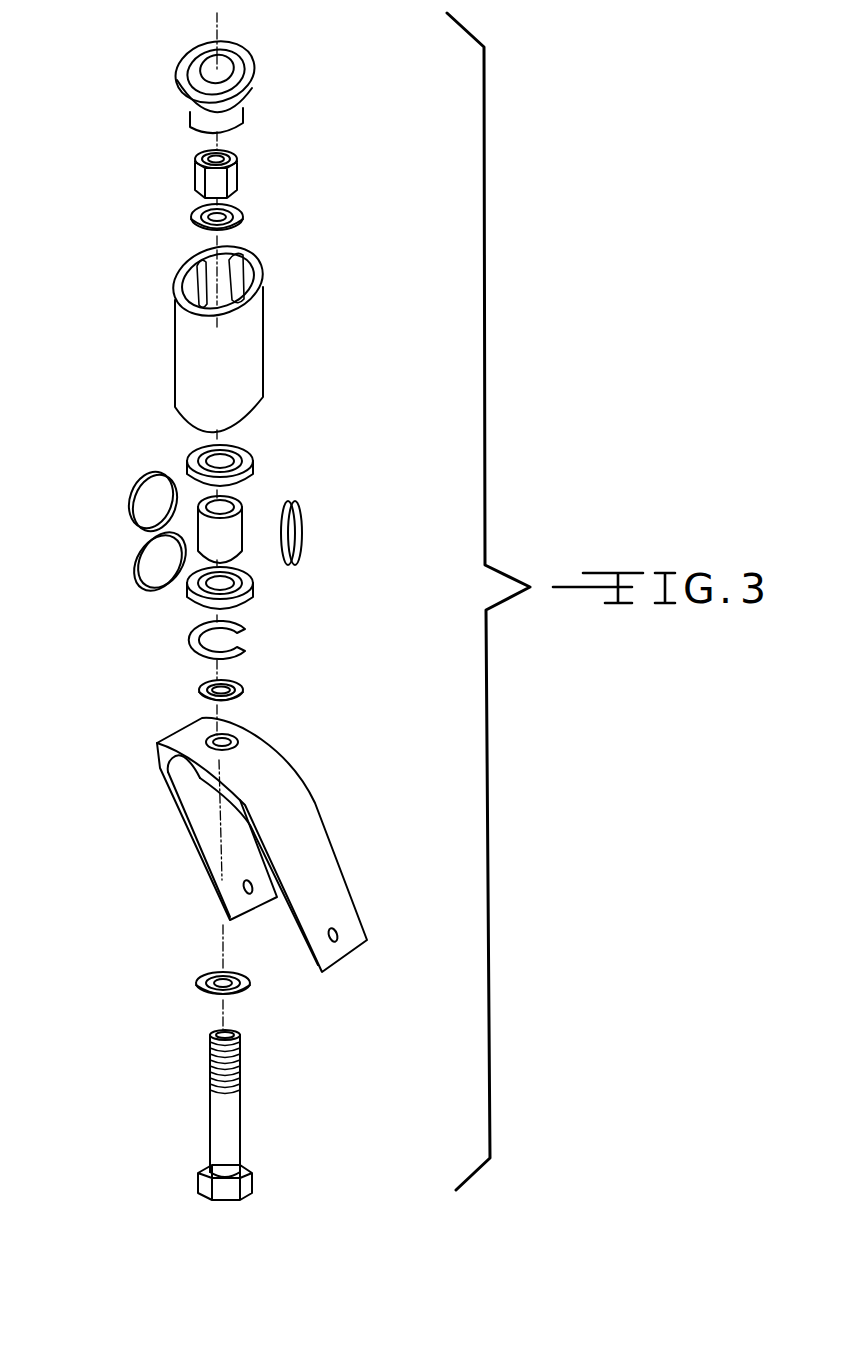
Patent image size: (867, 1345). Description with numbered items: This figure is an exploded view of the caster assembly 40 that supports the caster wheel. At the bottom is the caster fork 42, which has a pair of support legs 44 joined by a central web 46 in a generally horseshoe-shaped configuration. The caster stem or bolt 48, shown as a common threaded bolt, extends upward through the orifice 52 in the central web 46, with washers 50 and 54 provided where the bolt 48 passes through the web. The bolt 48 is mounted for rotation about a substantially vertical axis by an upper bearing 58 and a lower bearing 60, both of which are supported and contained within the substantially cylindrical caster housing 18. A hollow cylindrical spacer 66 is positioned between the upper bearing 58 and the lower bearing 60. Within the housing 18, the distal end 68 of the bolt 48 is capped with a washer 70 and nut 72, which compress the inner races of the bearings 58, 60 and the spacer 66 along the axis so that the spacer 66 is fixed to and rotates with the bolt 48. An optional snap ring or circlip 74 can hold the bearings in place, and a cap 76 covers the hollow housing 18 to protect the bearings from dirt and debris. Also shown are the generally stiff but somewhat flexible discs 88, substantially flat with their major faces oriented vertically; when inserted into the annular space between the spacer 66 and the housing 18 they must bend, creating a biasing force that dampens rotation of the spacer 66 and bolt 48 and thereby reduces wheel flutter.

The caster assembly 40 is at (347, 192).
The cap 76 is at (253, 75).
The nut 72 is at (243, 177).
The washer 70 is at (243, 222).
The caster housing 18 is at (247, 358).
The upper bearing 58 is at (253, 470).
The discs 88 is at (138, 550).
The spacer 66 is at (245, 535).
The lower bearing 60 is at (253, 593).
The snap ring or circlip 74 is at (253, 650).
The washer 54 is at (244, 695).
The caster fork 42 is at (313, 803).
The support legs 44 is at (330, 833).
The central web 46 is at (170, 776).
The orifice 52 is at (225, 740).
The washer 50 is at (250, 985).
The distal end 68 is at (209, 1065).
The caster stem or bolt 48 is at (241, 1115).